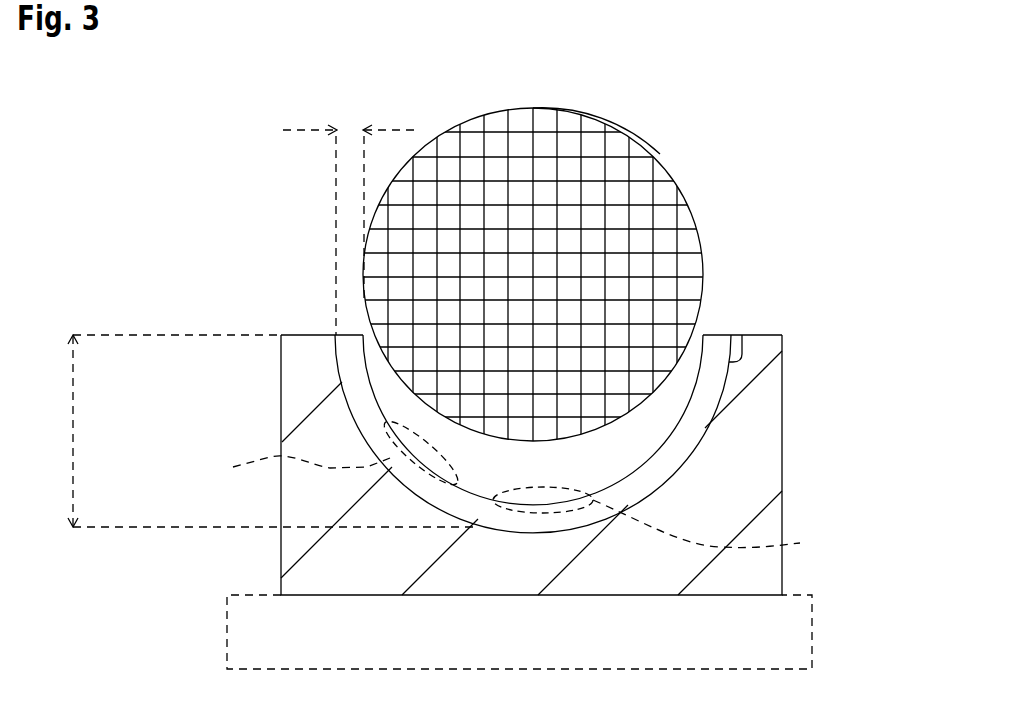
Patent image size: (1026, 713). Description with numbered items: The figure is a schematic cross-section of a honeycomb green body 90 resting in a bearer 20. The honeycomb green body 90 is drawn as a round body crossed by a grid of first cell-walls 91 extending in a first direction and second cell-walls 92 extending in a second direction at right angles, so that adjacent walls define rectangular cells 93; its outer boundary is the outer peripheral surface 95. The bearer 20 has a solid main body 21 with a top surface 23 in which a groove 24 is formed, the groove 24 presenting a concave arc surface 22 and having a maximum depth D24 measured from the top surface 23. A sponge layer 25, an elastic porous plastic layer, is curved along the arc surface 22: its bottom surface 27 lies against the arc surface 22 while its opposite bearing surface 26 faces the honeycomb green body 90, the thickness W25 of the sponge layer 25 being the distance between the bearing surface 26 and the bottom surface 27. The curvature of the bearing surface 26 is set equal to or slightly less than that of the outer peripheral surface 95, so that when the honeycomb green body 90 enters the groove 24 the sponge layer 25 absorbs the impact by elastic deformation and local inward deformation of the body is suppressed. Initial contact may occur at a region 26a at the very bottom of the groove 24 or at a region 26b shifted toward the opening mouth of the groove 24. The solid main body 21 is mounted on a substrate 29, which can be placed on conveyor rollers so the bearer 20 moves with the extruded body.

The bearer 20 is at (143, 205).
The solid main body 21 is at (770, 470).
The arc surface 22 is at (708, 410).
The top surface 23 is at (318, 334).
The groove 24 is at (553, 483).
The sponge layer 25 is at (721, 352).
The bearing surface 26 is at (698, 352).
The bottom surface 27 is at (734, 334).
The region at the most bottom side of the groove 26a is at (727, 532).
The region shifted toward the opening mouth side of the groove 26b is at (286, 478).
The substrate 29 is at (813, 633).
The honeycomb green body 90 is at (461, 118).
The first cell-wall 91 is at (566, 157).
The second cell-wall 92 is at (653, 166).
The cell 93 is at (496, 147).
The outer peripheral surface 95 is at (615, 120).
The thickness of the sponge layer W25 is at (342, 212).
The maximum depth of the groove D24 is at (273, 431).